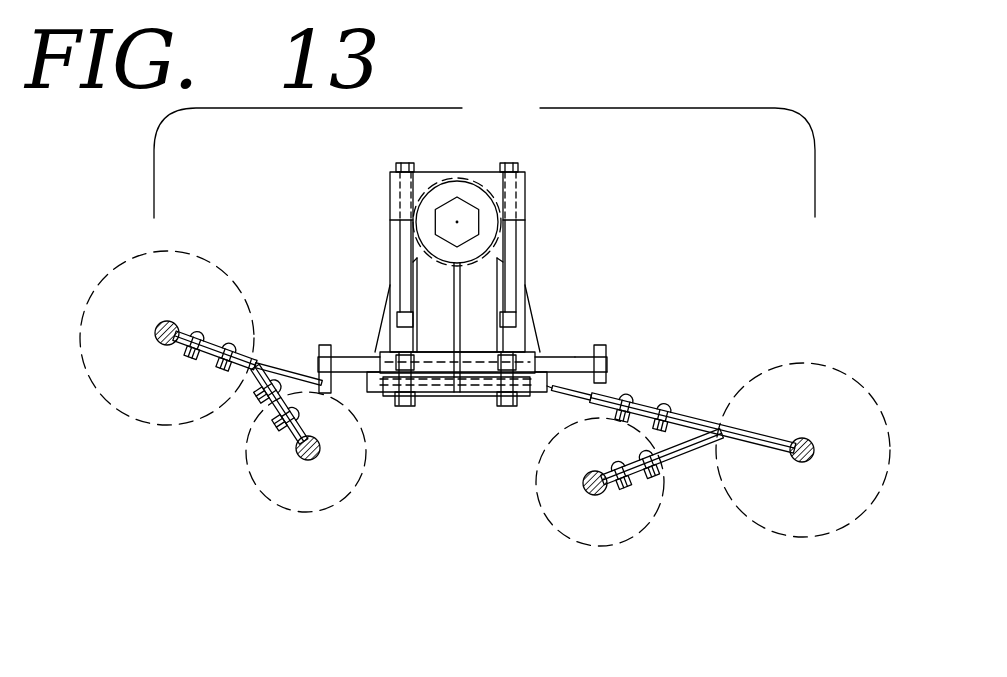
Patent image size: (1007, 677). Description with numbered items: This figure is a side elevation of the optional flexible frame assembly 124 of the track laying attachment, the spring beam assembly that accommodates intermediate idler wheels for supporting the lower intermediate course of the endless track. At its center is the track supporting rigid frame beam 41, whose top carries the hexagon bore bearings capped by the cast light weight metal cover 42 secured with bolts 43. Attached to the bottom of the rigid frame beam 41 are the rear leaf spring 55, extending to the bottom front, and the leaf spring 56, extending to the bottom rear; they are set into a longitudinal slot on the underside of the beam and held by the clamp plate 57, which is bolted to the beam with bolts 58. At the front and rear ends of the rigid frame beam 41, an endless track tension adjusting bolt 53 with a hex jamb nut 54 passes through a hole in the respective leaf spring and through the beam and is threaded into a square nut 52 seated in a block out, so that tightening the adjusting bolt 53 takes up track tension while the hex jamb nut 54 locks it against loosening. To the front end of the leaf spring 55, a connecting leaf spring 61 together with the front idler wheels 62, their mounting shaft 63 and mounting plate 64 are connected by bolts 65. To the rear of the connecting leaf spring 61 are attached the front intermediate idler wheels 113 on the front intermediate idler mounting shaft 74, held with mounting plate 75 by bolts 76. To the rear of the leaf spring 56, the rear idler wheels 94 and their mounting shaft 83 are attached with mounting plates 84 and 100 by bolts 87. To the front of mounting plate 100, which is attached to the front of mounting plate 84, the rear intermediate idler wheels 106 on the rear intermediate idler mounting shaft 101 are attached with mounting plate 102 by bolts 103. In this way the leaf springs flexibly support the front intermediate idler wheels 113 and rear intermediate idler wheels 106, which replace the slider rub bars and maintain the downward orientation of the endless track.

The optional flexible frame assembly 124 is at (484, 156).
The track supporting rigid frame beam 41 is at (392, 245).
The cast light weight metal cover 42 is at (525, 180).
The bolts 43 is at (395, 167).
The clamp plate 57 is at (451, 400).
The bolts 58 is at (399, 408).
The square nut 52 is at (521, 408).
The endless track tension adjusting bolt 53 is at (307, 347).
The hex jamb nut 54 is at (336, 343).
The rear leaf spring 55 is at (604, 343).
The front idler wheels 62 is at (137, 252).
The front idler mounting shaft 63 is at (160, 342).
The mounting plate 64 is at (205, 362).
The bolts 65 is at (190, 356).
The connecting leaf spring 61 is at (243, 369).
The bolts 76 is at (253, 387).
The mounting plate 75 is at (259, 400).
The front intermediate idler mounting shaft 74 is at (303, 458).
The front intermediate idler wheels 113 is at (323, 512).
The leaf spring 56 is at (683, 407).
The mounting plate 84 is at (605, 397).
The bolts 87 is at (637, 403).
The rear idler wheel mounting shaft 83 is at (810, 460).
The rear idler wheels 94 is at (843, 373).
The mounting plate 100 is at (690, 450).
The bolts 103 is at (621, 492).
The mounting plate 102 is at (662, 462).
The rear intermediate idler mounting shaft 101 is at (597, 495).
The rear intermediate idler wheels 106 is at (643, 523).